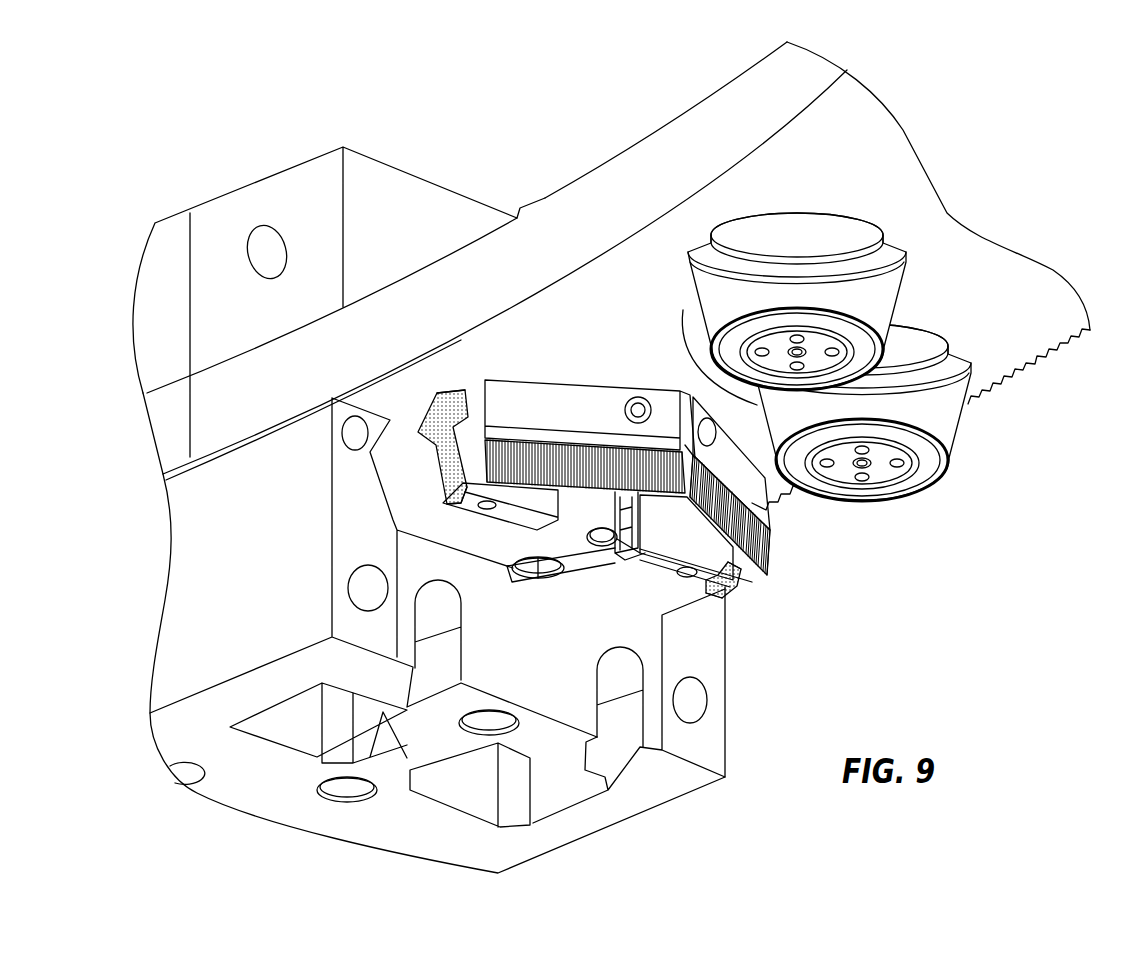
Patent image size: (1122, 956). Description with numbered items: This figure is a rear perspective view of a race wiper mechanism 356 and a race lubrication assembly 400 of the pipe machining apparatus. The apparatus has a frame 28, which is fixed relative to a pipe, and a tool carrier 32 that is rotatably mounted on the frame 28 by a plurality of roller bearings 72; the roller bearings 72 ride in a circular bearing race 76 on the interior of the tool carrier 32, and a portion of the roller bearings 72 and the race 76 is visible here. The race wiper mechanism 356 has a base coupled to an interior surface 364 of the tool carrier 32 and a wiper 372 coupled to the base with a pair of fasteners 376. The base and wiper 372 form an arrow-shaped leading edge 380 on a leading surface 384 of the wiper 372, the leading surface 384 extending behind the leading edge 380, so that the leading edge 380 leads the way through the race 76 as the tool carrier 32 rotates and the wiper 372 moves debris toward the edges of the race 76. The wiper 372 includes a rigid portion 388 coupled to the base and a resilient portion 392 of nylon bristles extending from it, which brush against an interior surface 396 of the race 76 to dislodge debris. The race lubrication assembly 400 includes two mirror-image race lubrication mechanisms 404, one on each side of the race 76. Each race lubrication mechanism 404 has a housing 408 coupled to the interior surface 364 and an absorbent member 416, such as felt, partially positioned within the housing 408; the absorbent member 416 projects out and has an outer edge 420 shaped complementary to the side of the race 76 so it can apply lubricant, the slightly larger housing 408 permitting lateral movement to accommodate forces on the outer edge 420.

The frame 28 is at (666, 779).
The tool carrier 32 is at (623, 178).
The roller bearings 72 is at (872, 227).
The bearing race 76 is at (654, 602).
The race wiper mechanism 356 is at (802, 524).
The interior surface 364 is at (979, 301).
The wiper 372 is at (606, 465).
The fasteners 376 is at (620, 398).
The leading edge 380 is at (705, 417).
The leading surface 384 is at (577, 422).
The rigid portion 388 is at (517, 392).
The resilient portion 392 is at (768, 557).
The interior surface 396 is at (655, 583).
The race lubrication assembly 400 is at (735, 600).
The race lubrication mechanism 404 is at (453, 473).
The housing 408 is at (463, 416).
The absorbent member 416 is at (440, 477).
The outer edge 420 is at (422, 449).